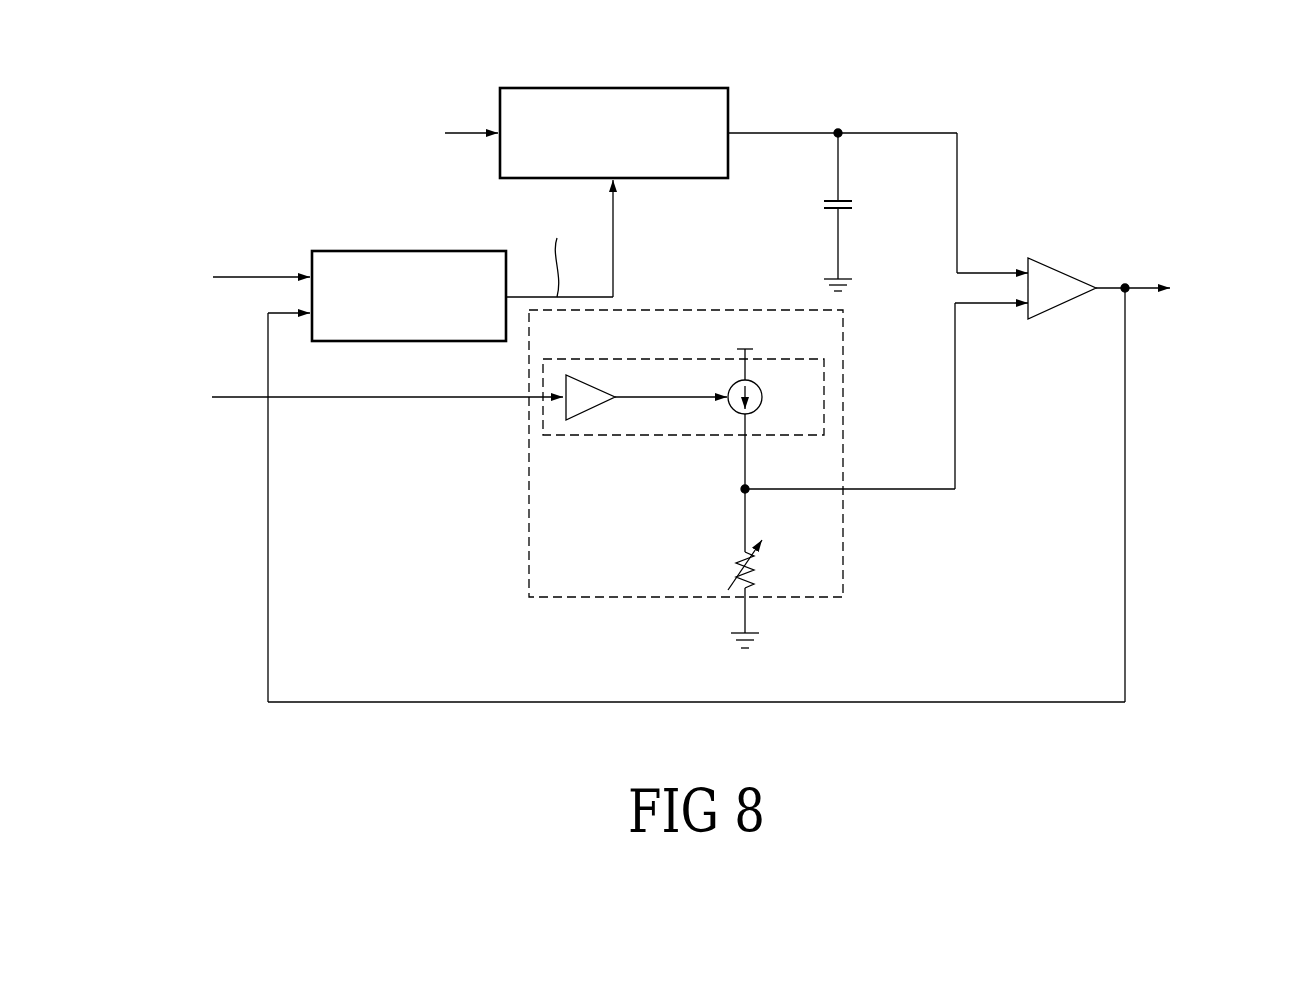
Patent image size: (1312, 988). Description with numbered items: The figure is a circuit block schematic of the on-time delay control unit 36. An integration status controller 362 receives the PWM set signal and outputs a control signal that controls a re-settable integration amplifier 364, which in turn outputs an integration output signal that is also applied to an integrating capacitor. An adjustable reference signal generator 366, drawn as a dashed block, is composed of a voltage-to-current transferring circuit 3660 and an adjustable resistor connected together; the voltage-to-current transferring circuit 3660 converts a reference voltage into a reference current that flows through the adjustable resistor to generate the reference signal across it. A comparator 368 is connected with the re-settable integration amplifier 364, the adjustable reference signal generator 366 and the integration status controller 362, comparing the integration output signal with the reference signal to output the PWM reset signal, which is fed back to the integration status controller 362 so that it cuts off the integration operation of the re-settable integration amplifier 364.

The on-time delay control unit 36 is at (1172, 88).
The integration status controller 362 is at (413, 251).
The re-settable integration amplifier 364 is at (614, 88).
The adjustable reference signal generator 366 is at (626, 457).
The voltage-to-current transferring circuit 3660 is at (683, 353).
The comparator 368 is at (1066, 270).